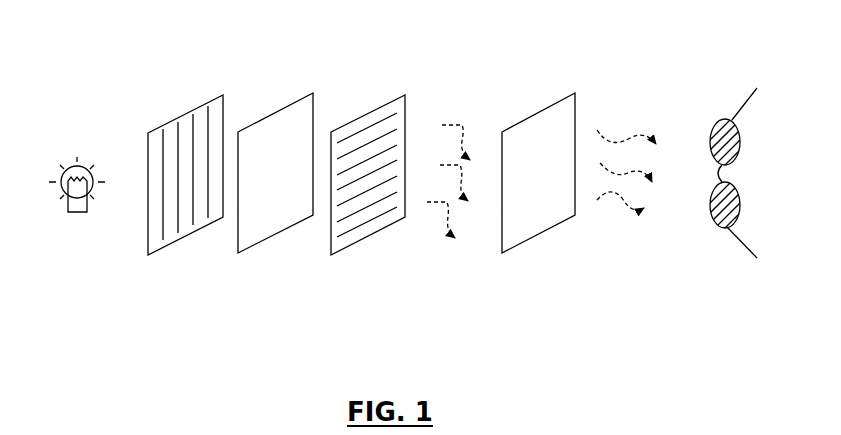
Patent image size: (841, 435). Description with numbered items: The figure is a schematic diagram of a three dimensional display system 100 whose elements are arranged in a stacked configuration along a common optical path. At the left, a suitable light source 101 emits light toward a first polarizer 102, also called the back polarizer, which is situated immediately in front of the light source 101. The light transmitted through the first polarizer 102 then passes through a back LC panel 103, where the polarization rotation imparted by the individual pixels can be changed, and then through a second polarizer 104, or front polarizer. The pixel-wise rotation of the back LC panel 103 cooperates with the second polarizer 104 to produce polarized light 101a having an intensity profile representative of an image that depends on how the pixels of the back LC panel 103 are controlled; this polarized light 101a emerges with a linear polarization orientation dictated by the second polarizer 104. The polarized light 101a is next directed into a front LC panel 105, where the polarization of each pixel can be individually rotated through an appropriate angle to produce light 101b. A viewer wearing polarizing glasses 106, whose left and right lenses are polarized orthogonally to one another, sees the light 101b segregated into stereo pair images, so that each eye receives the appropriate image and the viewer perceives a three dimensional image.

The display system 100 is at (167, 385).
The light source 101 is at (57, 234).
The polarized light 101a is at (462, 106).
The light 101b is at (660, 106).
The first polarizer 102 is at (184, 250).
The back LC panel 103 is at (277, 252).
The second polarizer 104 is at (367, 252).
The front LC panel 105 is at (540, 250).
The polarizing glasses 106 is at (714, 267).